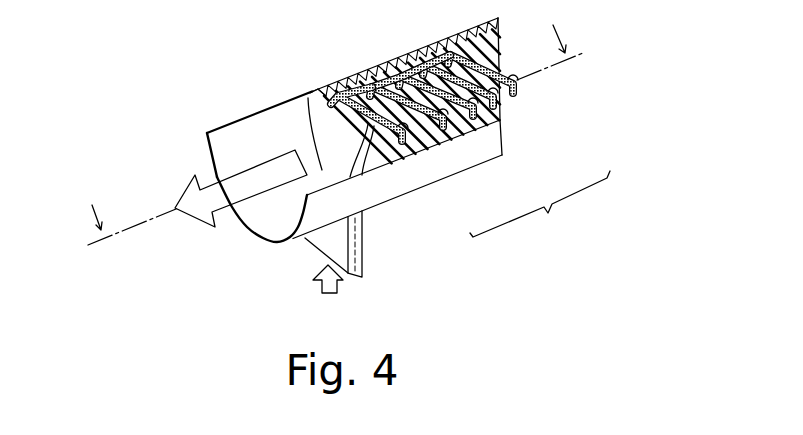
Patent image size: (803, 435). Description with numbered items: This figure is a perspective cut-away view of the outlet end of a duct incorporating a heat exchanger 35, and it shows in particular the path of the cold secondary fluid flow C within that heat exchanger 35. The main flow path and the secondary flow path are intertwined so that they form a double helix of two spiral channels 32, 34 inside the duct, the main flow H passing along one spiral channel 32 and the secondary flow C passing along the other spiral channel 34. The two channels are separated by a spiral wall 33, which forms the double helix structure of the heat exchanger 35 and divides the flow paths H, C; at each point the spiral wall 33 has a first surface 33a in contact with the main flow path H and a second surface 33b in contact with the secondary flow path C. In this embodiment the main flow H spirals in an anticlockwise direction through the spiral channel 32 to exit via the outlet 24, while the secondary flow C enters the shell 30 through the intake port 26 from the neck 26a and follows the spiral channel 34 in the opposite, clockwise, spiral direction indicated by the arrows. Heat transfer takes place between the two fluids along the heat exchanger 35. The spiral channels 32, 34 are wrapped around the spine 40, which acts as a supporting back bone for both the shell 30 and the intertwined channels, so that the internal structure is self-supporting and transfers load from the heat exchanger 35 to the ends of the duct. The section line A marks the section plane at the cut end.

The outlet 24 is at (242, 233).
The intake port 26 is at (364, 210).
The neck 26a is at (363, 262).
The shell 30 is at (450, 170).
The spiral channel 32 is at (312, 88).
The spiral wall 33 is at (381, 64).
The first surface 33a is at (386, 63).
The second surface 33b is at (365, 66).
The spiral channel 34 is at (307, 97).
The heat exchanger 35 is at (540, 207).
The spine 40 is at (338, 95).
The main flow path H is at (197, 225).
The secondary flow path C is at (320, 291).
The section line A- A is at (329, 134).